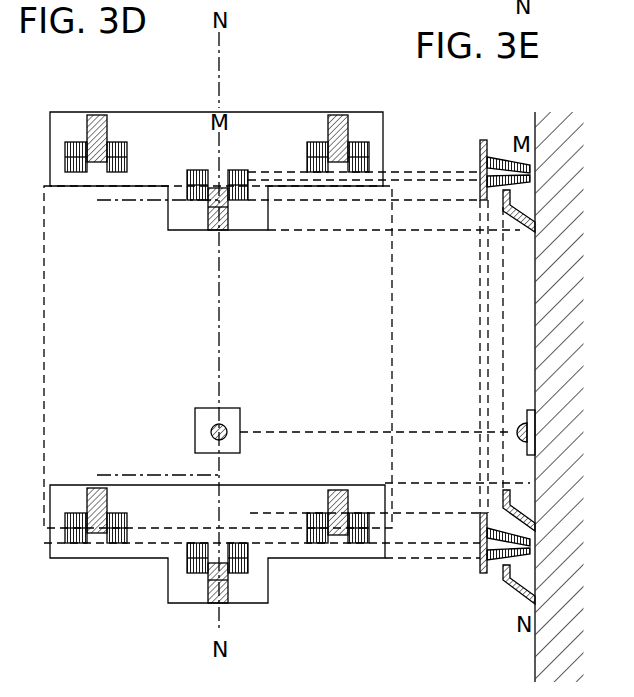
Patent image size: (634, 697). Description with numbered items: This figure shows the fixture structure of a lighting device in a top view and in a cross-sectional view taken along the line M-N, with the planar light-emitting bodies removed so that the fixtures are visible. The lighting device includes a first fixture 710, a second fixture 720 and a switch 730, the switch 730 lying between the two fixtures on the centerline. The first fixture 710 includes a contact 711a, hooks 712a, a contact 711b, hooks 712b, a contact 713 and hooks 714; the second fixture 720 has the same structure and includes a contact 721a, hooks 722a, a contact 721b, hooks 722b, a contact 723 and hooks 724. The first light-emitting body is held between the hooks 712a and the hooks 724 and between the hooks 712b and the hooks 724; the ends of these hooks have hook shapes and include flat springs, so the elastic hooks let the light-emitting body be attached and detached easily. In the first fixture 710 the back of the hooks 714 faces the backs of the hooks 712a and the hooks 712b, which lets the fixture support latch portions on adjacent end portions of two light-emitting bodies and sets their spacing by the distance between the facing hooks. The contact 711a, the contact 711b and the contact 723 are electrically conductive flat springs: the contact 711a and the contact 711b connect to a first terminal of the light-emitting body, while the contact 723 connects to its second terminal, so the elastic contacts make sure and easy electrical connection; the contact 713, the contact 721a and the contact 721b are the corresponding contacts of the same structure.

The first fixture 710 is at (177, 517).
The contact 711a is at (113, 477).
The contact 711b is at (354, 477).
The hooks 712a is at (123, 570).
The hooks 712b is at (366, 570).
The contact 713 is at (252, 615).
The hooks 714 is at (233, 511).
The second fixture 720 is at (182, 145).
The contact 721a is at (113, 101).
The contact 721b is at (354, 102).
The hooks 722a is at (123, 199).
The hooks 722b is at (366, 199).
The contact 723 is at (229, 248).
The hooks 724 is at (222, 137).
The switch 730 is at (249, 406).